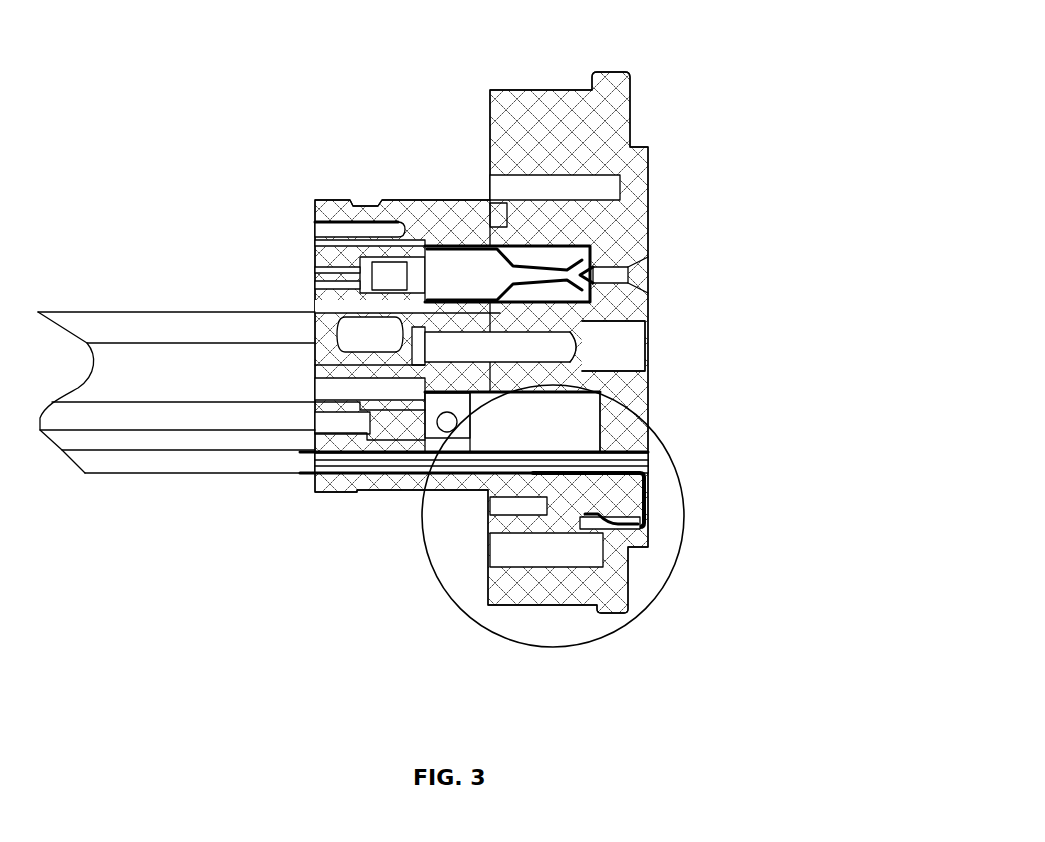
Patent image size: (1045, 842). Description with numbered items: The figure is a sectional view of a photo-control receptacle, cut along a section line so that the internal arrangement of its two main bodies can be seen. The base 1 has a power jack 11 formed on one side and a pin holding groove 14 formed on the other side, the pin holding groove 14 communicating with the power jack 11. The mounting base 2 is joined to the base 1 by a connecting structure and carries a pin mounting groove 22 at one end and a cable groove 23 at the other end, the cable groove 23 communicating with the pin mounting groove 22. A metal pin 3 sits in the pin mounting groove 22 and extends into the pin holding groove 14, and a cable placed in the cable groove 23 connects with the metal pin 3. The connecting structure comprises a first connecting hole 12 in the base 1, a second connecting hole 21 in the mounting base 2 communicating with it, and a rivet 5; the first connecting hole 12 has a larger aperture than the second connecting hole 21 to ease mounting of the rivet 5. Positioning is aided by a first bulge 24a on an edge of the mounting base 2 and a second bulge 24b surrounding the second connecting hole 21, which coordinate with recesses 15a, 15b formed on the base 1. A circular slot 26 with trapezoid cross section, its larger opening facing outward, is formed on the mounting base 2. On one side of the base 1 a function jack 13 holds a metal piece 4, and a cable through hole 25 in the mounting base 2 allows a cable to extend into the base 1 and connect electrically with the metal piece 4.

The base 1 is at (632, 118).
The mounting base 2 is at (437, 207).
The metal pin 3 is at (593, 262).
The metal piece 4 is at (652, 490).
The rivet 5 is at (452, 445).
The power jack 11 is at (648, 270).
The first connecting hole 12 is at (625, 350).
The function jack 13 is at (600, 512).
The pin holding groove 14 is at (583, 248).
The recess 15a is at (476, 350).
The recess 15b is at (545, 376).
The second connecting hole 21 is at (315, 293).
The pin mounting groove 22 is at (428, 205).
The cable groove 23 is at (322, 255).
The first bulge 24a is at (487, 195).
The second bulge 24b is at (328, 247).
The cable through hole 25 is at (440, 430).
The circular slot 26 is at (400, 240).